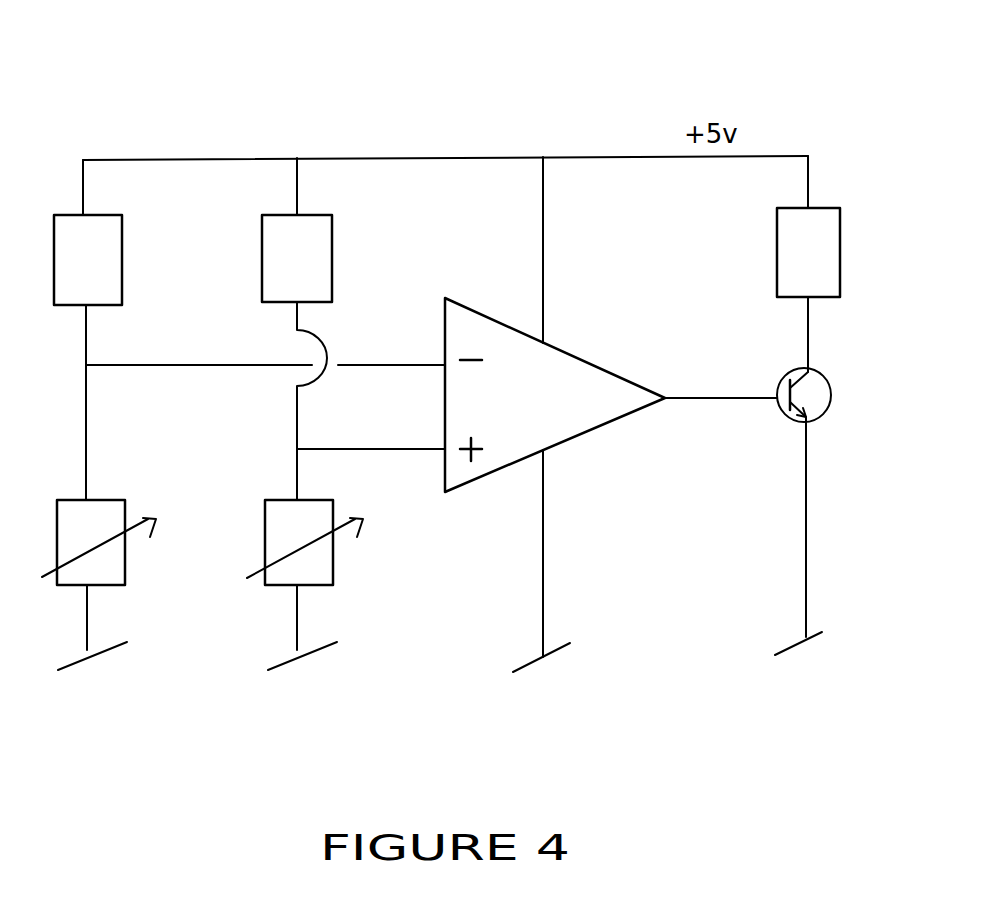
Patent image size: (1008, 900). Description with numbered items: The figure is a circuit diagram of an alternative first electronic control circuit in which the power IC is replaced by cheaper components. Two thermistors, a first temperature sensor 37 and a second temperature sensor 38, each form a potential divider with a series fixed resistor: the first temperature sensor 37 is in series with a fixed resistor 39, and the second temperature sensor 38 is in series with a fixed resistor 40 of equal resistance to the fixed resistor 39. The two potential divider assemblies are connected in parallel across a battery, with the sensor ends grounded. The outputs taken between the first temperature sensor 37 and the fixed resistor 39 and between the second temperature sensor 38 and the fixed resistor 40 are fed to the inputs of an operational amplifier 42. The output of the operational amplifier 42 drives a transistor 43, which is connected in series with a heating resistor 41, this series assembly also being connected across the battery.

The first temperature sensor 37 is at (112, 567).
The second temperature sensor 38 is at (320, 567).
The fixed resistor 39 is at (67, 250).
The fixed resistor 40 is at (298, 238).
The heating resistor 41 is at (798, 232).
The operational amplifier 42 is at (465, 330).
The transistor 43 is at (822, 402).